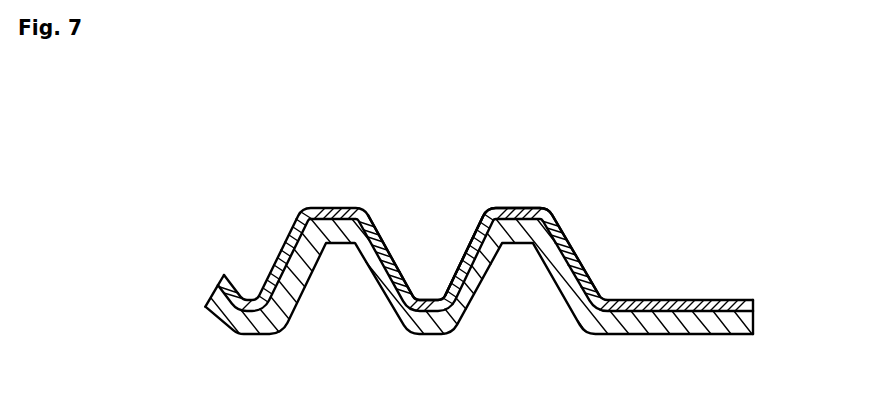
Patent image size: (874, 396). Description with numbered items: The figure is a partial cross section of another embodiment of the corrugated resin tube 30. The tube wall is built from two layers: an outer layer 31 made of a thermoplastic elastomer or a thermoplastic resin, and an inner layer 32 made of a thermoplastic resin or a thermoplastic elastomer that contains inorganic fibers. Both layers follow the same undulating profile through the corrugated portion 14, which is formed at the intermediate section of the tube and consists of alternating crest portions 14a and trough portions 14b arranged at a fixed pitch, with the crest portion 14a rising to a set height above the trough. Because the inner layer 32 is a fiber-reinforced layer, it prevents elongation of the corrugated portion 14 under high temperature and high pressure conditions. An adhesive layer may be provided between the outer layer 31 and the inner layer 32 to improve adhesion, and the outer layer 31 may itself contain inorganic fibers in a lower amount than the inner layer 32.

The corrugated portion 14 is at (488, 202).
The crest portion 14a is at (522, 227).
The trough portion 14b is at (427, 290).
The corrugated resin tube 30 is at (518, 233).
The outer layer 31 is at (757, 306).
The inner layer 32 is at (757, 318).